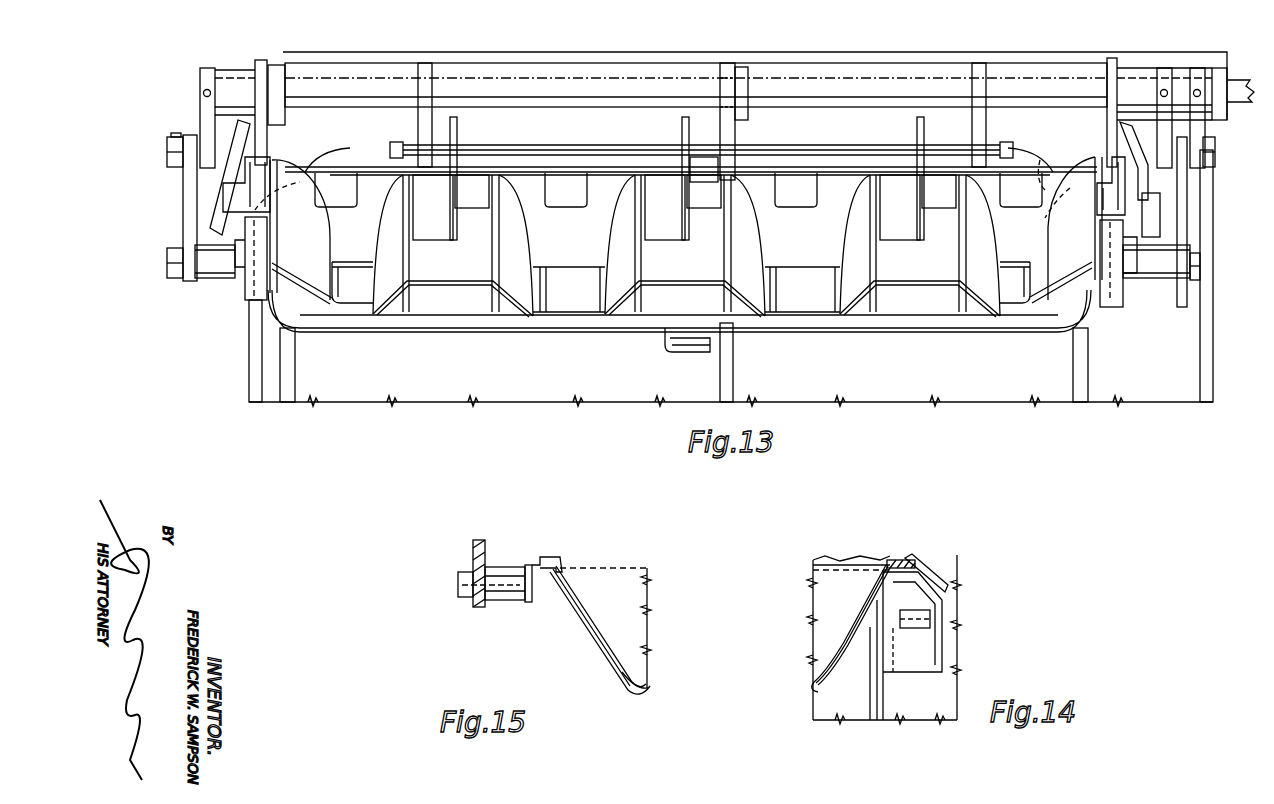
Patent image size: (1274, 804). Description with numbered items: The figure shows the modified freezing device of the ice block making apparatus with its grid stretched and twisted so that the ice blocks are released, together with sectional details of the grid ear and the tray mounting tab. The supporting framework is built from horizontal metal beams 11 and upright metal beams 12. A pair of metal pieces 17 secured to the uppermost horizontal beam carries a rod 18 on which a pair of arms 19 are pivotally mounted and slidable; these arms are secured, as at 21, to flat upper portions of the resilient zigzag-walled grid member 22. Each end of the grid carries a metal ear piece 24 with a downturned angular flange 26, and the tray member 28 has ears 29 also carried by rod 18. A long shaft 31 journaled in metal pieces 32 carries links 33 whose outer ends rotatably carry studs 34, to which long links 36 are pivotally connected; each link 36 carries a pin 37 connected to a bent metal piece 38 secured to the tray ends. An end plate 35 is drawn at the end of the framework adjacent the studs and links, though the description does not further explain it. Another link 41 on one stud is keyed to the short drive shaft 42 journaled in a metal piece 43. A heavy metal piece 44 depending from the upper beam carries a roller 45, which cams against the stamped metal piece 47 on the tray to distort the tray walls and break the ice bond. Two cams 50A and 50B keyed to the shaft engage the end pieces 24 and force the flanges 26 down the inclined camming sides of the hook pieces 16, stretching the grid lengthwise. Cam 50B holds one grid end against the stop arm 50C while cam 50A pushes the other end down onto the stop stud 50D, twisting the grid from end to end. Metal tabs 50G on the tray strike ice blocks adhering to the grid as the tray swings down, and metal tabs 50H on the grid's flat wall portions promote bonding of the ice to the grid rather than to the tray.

In FIG. 13, the horizontal metal beam 11 is at (745, 70).
In FIG. 13, the upright metal beam 12 is at (295, 372).
In FIG. 13, the hook piece 16 is at (225, 180).
In FIG. 14, the hook piece 16 is at (942, 635).
In FIG. 13, the metal piece 17 is at (428, 63).
In FIG. 13, the rod 18 is at (862, 150).
In FIG. 13, the arm 19 is at (467, 178).
In FIG. 13, the securing point 21 is at (433, 218).
In FIG. 13, the grid member 22 is at (453, 299).
In FIG. 15, the grid member 22 is at (580, 590).
In FIG. 14, the grid member 22 is at (878, 590).
In FIG. 13, the ear piece 24 is at (290, 172).
In FIG. 14, the ear piece 24 is at (906, 560).
In FIG. 13, the flange 26 is at (218, 215).
In FIG. 14, the flange 26 is at (946, 582).
In FIG. 13, the tray member 28 is at (462, 333).
In FIG. 15, the tray member 28 is at (622, 672).
In FIG. 14, the tray member 28 is at (835, 688).
In FIG. 13, the ear 29 is at (470, 146).
In FIG. 13, the shaft 31 is at (542, 75).
In FIG. 13, the metal piece 32 is at (280, 65).
In FIG. 13, the link 33 is at (208, 68).
In FIG. 13, the stud 34 is at (168, 147).
In FIG. 13, the end plate 35 is at (190, 180).
In FIG. 13, the link 36 is at (1187, 200).
In FIG. 15, the link 36 is at (482, 546).
In FIG. 13, the pin 37 is at (167, 263).
In FIG. 15, the pin 37 is at (460, 585).
In FIG. 13, the bent metal piece 38 is at (245, 290).
In FIG. 15, the bent metal piece 38 is at (548, 557).
In FIG. 13, the link 41 is at (1205, 120).
In FIG. 13, the drive shaft 42 is at (1242, 80).
In FIG. 13, the metal piece 43 is at (1220, 52).
In FIG. 13, the heavy metal piece 44 is at (728, 65).
In FIG. 13, the roller 45 is at (720, 166).
In FIG. 13, the stamped metal piece 47 is at (668, 351).
In FIG. 13, the cam 50A is at (1112, 58).
In FIG. 13, the cam 50B is at (260, 60).
In FIG. 13, the stop arm 50C is at (249, 358).
In FIG. 13, the stop stud 50D is at (1062, 185).
In FIG. 14, the stop stud 50D is at (922, 628).
In FIG. 13, the metal tab 50G is at (340, 207).
In FIG. 13, the metal tab 50H is at (472, 212).